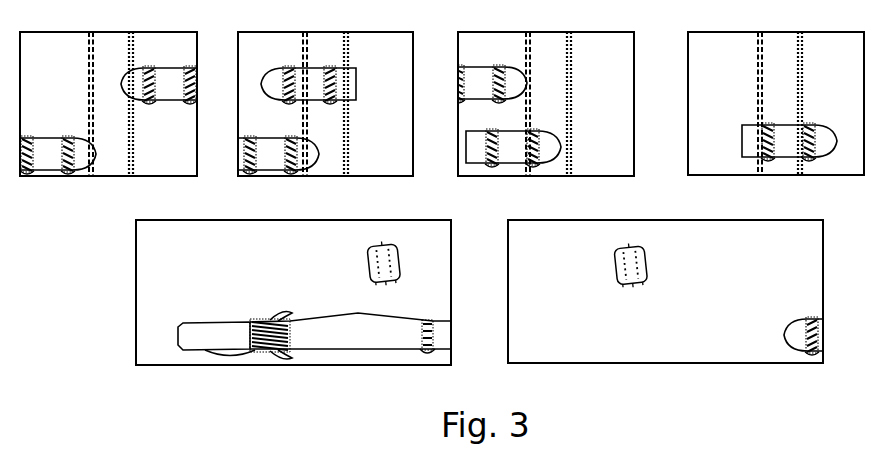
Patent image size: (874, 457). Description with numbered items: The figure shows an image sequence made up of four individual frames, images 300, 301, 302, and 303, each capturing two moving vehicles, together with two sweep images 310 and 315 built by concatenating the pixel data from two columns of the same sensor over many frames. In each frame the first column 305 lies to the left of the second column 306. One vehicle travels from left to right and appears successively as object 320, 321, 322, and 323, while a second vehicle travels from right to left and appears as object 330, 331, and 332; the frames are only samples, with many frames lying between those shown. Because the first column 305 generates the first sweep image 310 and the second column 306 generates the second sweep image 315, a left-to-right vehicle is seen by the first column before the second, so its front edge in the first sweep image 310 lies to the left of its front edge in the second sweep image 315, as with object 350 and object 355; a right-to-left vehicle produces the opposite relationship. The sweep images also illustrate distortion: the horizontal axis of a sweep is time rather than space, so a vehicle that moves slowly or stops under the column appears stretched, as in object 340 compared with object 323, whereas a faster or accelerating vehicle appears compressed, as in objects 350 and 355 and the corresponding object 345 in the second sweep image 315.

The image 300 is at (108, 93).
The image 301 is at (325, 92).
The image 302 is at (546, 92).
The image 303 is at (770, 91).
The first column 305 is at (419, 94).
The second column 306 is at (460, 93).
The first sweep image 310 is at (274, 290).
The second sweep image 315 is at (648, 290).
The object 320 is at (82, 138).
The object 321 is at (289, 139).
The object 322 is at (513, 139).
The object 323 is at (780, 133).
The object 330 is at (150, 69).
The object 331 is at (293, 70).
The object 332 is at (479, 73).
The stretched object 340 is at (314, 332).
The object 345 is at (819, 326).
The object front edge 350 is at (379, 246).
The object front edge 355 is at (625, 249).